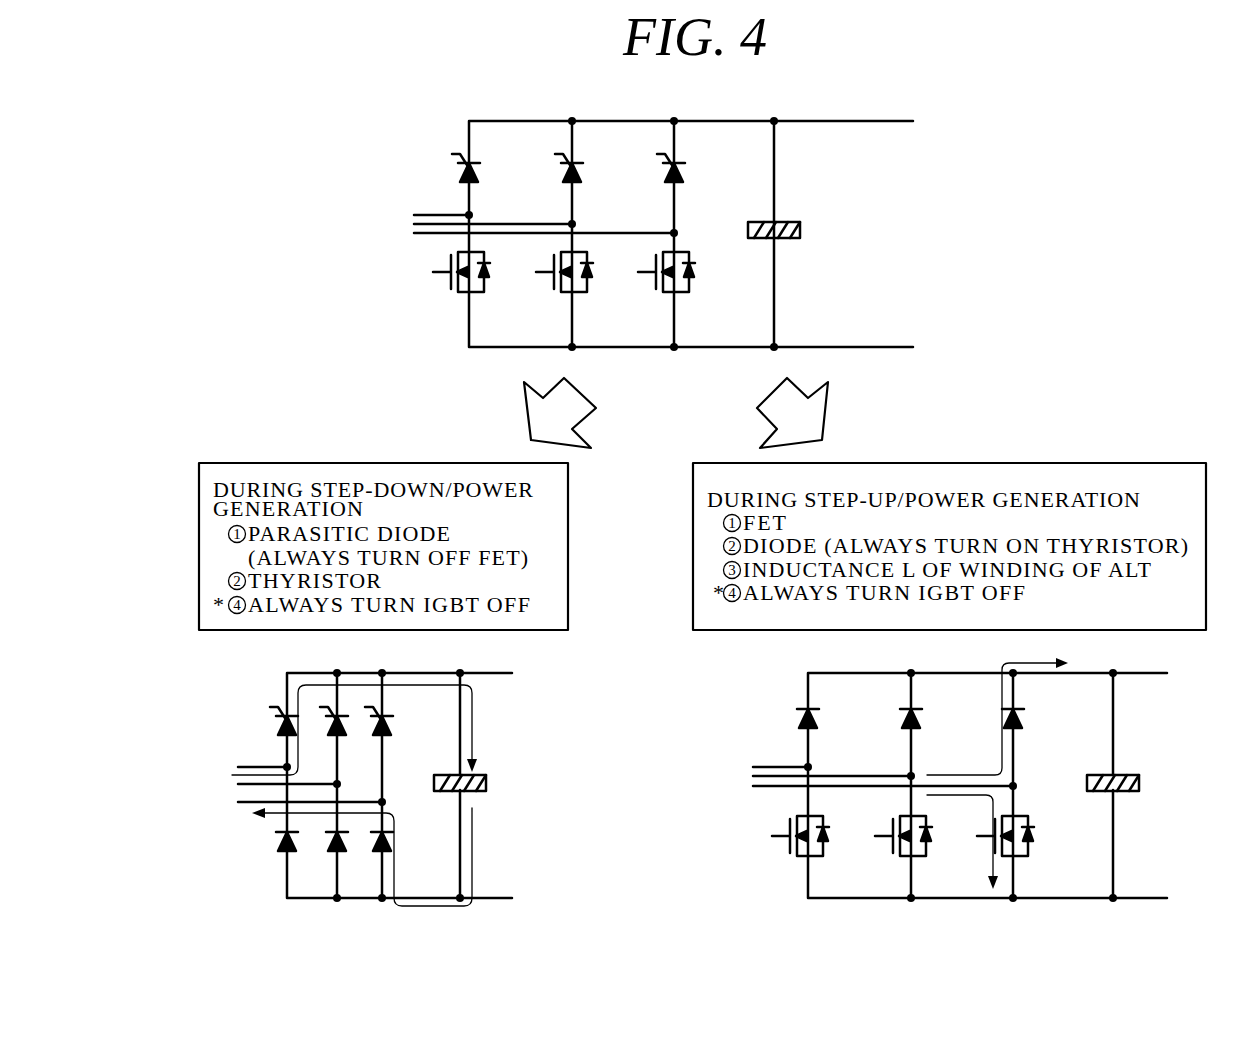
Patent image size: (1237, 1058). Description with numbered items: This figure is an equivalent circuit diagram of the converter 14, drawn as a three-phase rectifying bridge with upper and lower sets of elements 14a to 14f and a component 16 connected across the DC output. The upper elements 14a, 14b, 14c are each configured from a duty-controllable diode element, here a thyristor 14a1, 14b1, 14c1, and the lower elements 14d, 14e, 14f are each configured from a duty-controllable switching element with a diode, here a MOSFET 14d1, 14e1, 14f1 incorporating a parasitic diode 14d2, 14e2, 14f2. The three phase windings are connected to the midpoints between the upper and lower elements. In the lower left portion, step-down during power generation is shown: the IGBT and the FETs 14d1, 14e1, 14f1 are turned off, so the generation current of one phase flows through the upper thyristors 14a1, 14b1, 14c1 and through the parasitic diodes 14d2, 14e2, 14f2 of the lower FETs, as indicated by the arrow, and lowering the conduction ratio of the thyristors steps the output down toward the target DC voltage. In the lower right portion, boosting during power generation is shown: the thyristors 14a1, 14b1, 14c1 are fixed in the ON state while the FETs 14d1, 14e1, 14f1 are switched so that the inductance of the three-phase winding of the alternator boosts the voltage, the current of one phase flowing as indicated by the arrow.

The converter 14 is at (851, 105).
The upper element 14a is at (453, 155).
The upper element 14b is at (556, 155).
The upper element 14c is at (658, 155).
The lower element 14d is at (451, 278).
The lower element 14e is at (554, 278).
The lower element 14f is at (656, 278).
The duty-controllable diode element (thyristor) 14a1 is at (265, 705).
The duty-controllable diode element (thyristor) 14b1 is at (318, 704).
The duty-controllable diode element (thyristor) 14c1 is at (420, 742).
The MOSFET 14d1 is at (791, 830).
The MOSFET 14e1 is at (894, 830).
The MOSFET 14f1 is at (996, 830).
The parasitic diode 14d2 is at (280, 846).
The parasitic diode 14e2 is at (327, 846).
The parasitic diode 14f2 is at (388, 846).
The capacitor 16 is at (793, 222).